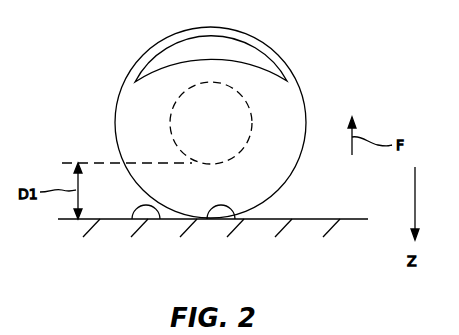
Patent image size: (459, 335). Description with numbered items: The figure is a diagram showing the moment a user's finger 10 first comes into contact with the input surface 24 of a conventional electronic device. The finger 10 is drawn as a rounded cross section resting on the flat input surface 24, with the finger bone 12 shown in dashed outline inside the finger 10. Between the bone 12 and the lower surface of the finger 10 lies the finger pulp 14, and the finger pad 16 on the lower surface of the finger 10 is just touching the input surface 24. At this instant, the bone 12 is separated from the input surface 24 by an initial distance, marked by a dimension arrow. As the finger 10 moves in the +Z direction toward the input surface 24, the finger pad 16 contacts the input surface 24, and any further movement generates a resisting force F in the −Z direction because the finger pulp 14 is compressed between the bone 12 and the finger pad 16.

The finger 10 is at (325, 77).
The finger bone 12 is at (168, 117).
The finger pulp 14 is at (228, 182).
The finger pad 16 is at (233, 220).
The input surface 24 is at (155, 220).